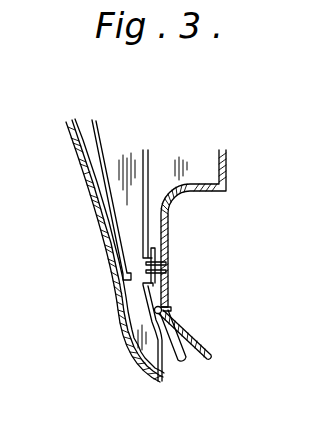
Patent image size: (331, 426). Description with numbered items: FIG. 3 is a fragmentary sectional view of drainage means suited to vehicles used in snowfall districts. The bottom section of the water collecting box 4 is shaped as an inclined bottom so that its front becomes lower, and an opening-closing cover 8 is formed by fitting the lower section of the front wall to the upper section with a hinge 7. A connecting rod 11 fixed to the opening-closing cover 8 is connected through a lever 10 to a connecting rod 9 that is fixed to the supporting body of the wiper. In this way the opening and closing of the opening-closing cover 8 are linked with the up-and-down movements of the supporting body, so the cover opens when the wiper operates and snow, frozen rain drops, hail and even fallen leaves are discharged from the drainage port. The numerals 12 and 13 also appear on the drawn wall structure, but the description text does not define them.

The water collecting box 4 is at (197, 195).
The hinge 7 is at (163, 310).
The opening-closing cover 8 is at (188, 339).
The connecting rod 9 is at (148, 163).
The lever 10 is at (166, 256).
The connecting rod 11 is at (160, 333).
The outer wall 12 is at (103, 193).
The inner panel 13 is at (99, 134).